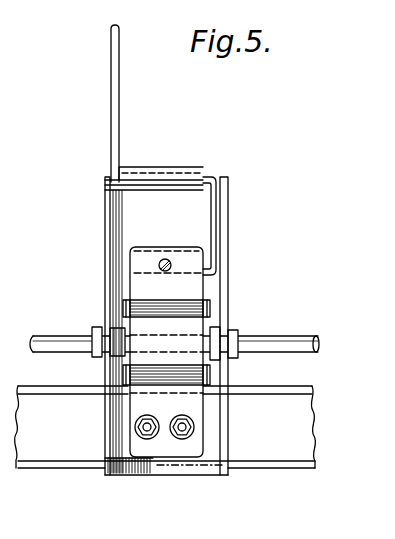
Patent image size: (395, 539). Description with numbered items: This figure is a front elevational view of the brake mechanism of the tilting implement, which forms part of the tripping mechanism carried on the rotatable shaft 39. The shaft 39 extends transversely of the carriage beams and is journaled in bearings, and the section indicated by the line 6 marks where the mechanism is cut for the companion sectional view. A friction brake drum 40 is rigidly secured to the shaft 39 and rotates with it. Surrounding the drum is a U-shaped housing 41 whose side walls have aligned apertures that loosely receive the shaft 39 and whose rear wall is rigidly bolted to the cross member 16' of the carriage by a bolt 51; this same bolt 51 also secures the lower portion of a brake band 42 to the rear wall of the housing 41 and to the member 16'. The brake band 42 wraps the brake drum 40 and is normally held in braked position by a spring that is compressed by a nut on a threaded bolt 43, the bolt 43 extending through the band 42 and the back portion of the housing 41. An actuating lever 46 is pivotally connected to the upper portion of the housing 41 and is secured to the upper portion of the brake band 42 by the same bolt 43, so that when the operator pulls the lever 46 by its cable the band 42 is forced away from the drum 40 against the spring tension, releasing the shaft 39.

The section line 6- 6 is at (165, 178).
The carriage cross member 16' is at (187, 427).
The rotatable shaft 39 is at (299, 338).
The friction brake drum 40 is at (208, 302).
The U-shaped housing 41 is at (229, 249).
The brake band 42 is at (193, 333).
The threaded bolt 43 is at (159, 264).
The actuating lever 46 is at (110, 88).
The bolt 51 is at (178, 421).